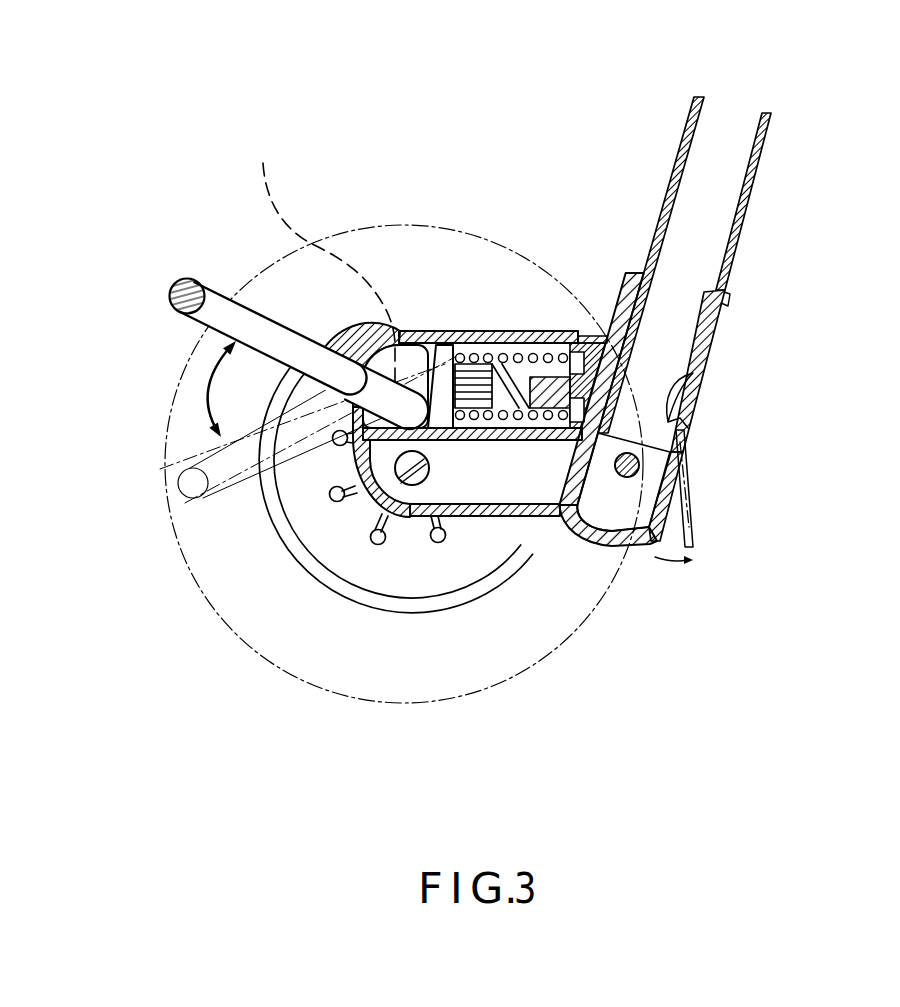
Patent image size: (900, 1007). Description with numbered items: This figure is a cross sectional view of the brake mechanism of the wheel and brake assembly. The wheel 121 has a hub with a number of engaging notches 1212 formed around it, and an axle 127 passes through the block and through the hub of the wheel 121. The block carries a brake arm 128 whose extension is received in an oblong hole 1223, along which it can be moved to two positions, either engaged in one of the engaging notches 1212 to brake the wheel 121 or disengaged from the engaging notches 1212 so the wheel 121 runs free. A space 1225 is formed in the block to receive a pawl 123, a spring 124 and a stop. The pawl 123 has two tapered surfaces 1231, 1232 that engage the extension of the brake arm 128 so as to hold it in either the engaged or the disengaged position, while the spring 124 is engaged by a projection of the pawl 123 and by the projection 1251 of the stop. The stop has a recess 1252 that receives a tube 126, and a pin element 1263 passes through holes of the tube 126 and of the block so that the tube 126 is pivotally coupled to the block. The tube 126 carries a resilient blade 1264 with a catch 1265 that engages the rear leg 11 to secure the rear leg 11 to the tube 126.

The rear leg 11 is at (684, 138).
The wheel 121 is at (533, 657).
The engaging notches 1212 is at (407, 527).
The oblong hole 1223 is at (313, 273).
The space 1225 is at (531, 345).
The pawl 123 is at (451, 340).
The tapered surface 1231 is at (409, 358).
The tapered surface 1232 is at (448, 438).
The spring 124 is at (496, 362).
The projection 1251 is at (552, 392).
The recess 1252 is at (602, 345).
The tube 126 is at (729, 303).
The pin element 1263 is at (642, 466).
The resilient blade 1264 is at (687, 512).
The catch 1265 is at (690, 375).
The axle 127 is at (398, 478).
The brake arm 128 is at (207, 287).